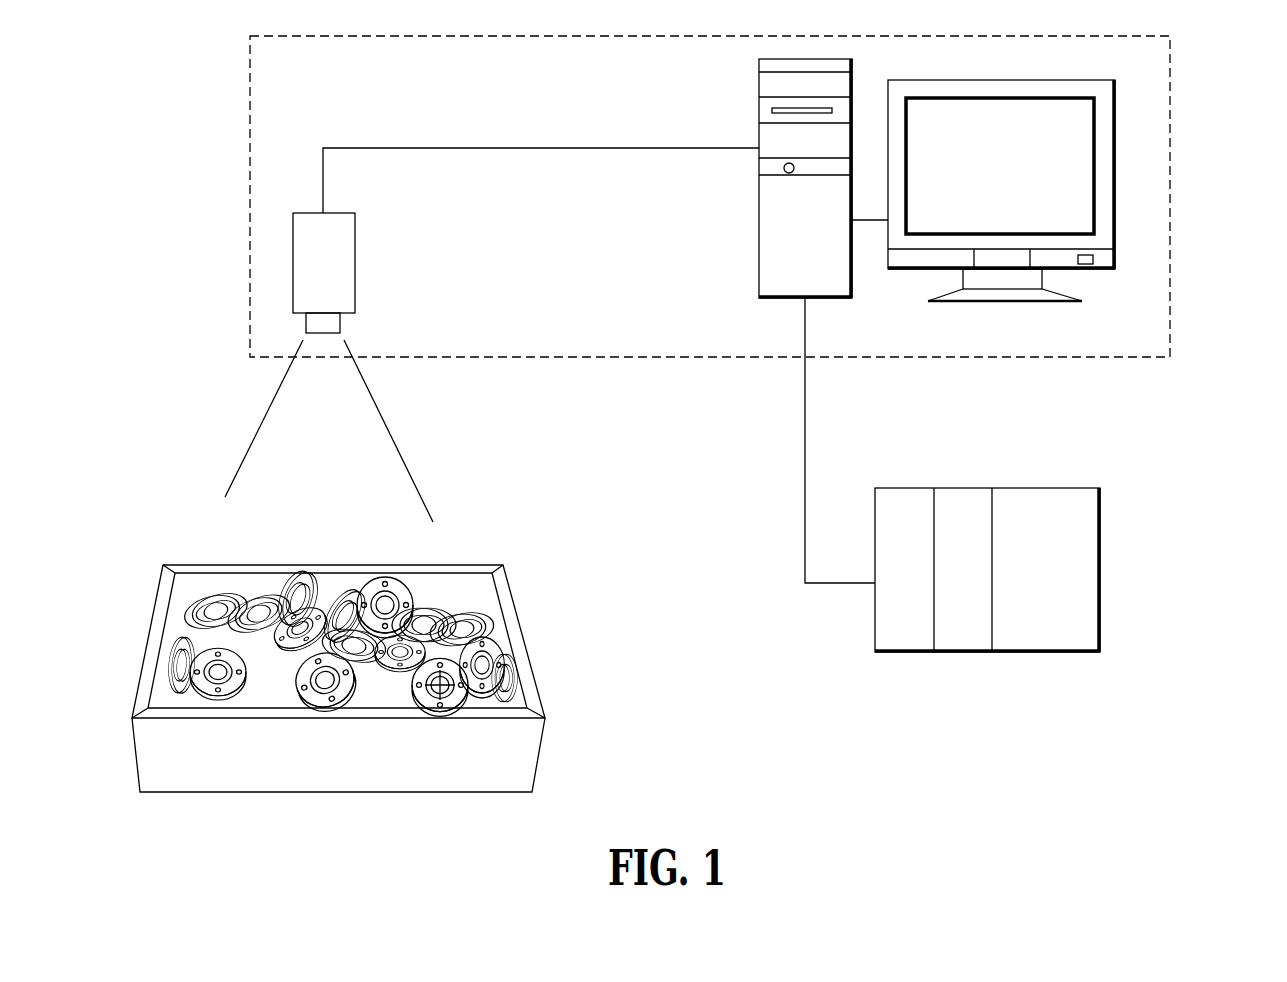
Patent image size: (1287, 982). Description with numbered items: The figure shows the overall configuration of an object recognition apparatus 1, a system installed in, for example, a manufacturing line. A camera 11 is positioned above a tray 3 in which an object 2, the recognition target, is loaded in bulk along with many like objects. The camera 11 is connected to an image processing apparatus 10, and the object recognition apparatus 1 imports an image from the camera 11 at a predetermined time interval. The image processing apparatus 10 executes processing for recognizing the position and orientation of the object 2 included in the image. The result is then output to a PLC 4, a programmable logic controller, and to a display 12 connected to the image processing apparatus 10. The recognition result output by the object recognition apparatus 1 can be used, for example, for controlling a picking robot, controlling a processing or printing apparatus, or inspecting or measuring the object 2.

The object recognition apparatus 1 is at (1178, 102).
The object 2 is at (267, 598).
The tray 3 is at (533, 657).
The PLC (Programmable Logic Controller) 4 is at (1103, 583).
The image processing apparatus 10 is at (757, 110).
The camera 11 is at (355, 257).
The display 12 is at (1117, 207).